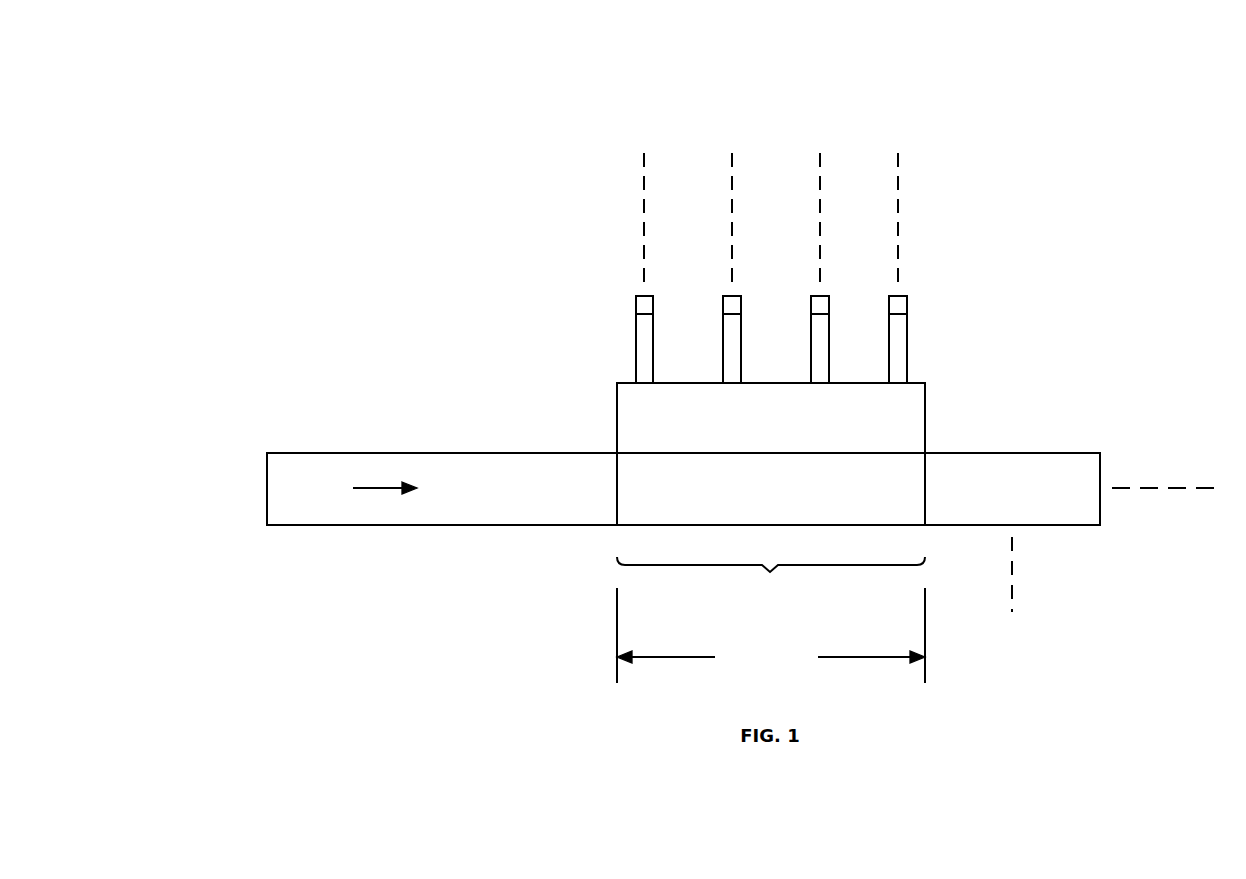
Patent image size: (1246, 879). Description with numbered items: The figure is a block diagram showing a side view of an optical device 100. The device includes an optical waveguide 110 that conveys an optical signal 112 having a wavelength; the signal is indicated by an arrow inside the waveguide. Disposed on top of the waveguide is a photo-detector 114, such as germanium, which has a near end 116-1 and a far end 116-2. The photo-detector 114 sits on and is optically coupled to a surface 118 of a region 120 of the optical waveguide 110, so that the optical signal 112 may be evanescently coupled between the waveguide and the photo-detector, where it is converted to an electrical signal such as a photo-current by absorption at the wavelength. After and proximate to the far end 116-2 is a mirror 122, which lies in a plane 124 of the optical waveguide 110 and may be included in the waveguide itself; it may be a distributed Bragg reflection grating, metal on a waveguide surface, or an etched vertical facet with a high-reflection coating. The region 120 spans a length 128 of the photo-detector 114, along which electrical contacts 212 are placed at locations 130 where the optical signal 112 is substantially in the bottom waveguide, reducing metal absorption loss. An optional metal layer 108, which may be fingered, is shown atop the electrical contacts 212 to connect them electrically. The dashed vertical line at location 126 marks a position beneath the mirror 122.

The optical device 100 is at (250, 93).
The optional metal layer 108 is at (645, 307).
The optical waveguide 110 is at (332, 480).
The optical signal 112 is at (382, 490).
The photo-detector 114 is at (662, 430).
The near end 116-1 is at (617, 433).
The far end 116-2 is at (926, 428).
The surface 118 is at (743, 454).
The region 120 is at (771, 593).
The mirror 122 is at (1012, 489).
The plane 124 is at (1148, 488).
The location 126 is at (1012, 599).
The length 128 is at (771, 640).
The locations 130 is at (647, 195).
The electrical contacts 212 is at (888, 342).